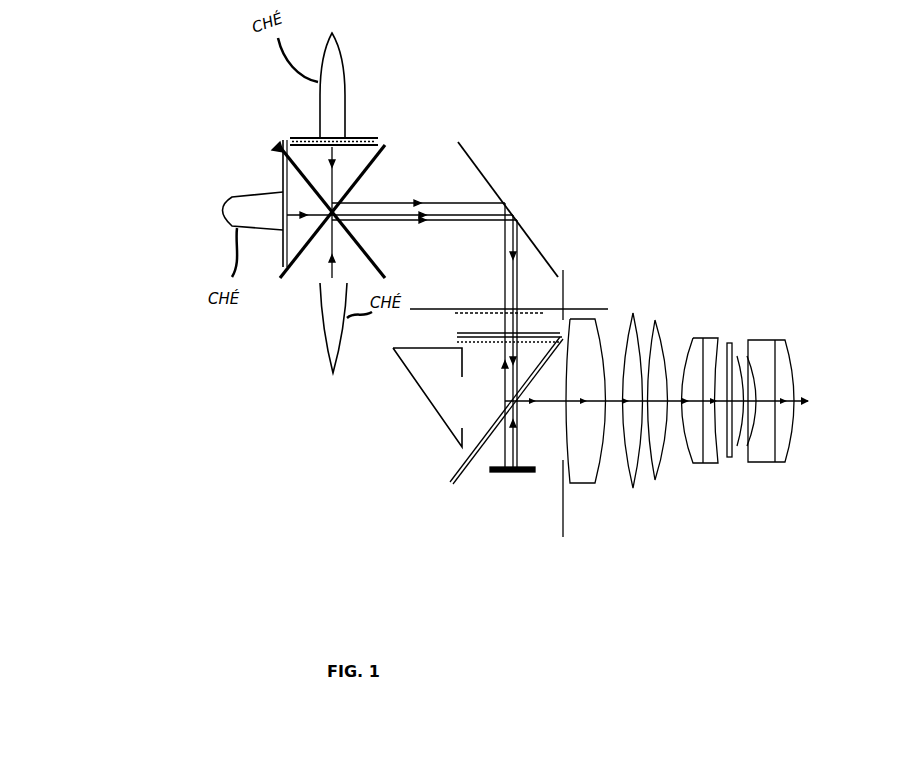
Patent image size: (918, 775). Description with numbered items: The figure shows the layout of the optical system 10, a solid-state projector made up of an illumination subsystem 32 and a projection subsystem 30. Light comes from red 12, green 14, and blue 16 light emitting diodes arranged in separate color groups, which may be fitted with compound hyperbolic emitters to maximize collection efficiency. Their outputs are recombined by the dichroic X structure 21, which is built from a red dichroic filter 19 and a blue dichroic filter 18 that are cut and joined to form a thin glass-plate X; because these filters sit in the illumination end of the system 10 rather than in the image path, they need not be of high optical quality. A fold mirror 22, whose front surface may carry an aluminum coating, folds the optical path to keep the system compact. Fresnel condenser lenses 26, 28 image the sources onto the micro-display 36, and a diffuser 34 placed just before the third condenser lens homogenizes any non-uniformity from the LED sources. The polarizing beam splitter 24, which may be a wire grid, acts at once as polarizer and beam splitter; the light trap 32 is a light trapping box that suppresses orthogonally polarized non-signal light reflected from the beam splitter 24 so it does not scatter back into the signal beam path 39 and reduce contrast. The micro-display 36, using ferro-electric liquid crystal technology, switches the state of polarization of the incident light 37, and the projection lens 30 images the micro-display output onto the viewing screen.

The optical system 10 is at (96, 155).
The red light emitting diode 12 is at (342, 28).
The green light emitting diode 14 is at (212, 214).
The blue light emitting diode 16 is at (328, 373).
The blue dichroic filter 18 is at (380, 139).
The red dichroic filter 19 is at (290, 140).
The dichroic X structure 21 is at (277, 147).
The fold mirror 22 is at (476, 160).
The polarizing beam splitter 24 is at (450, 482).
The Fresnel condenser lens 26 is at (550, 308).
The Fresnel condenser lens 28 is at (565, 338).
The projection lens 30 is at (709, 548).
The illumination subsystem 32 is at (428, 423).
The diffuser 34 is at (463, 323).
The micro-display 36 is at (490, 473).
The incident light 37 is at (517, 450).
The signal beam path 39 is at (653, 400).